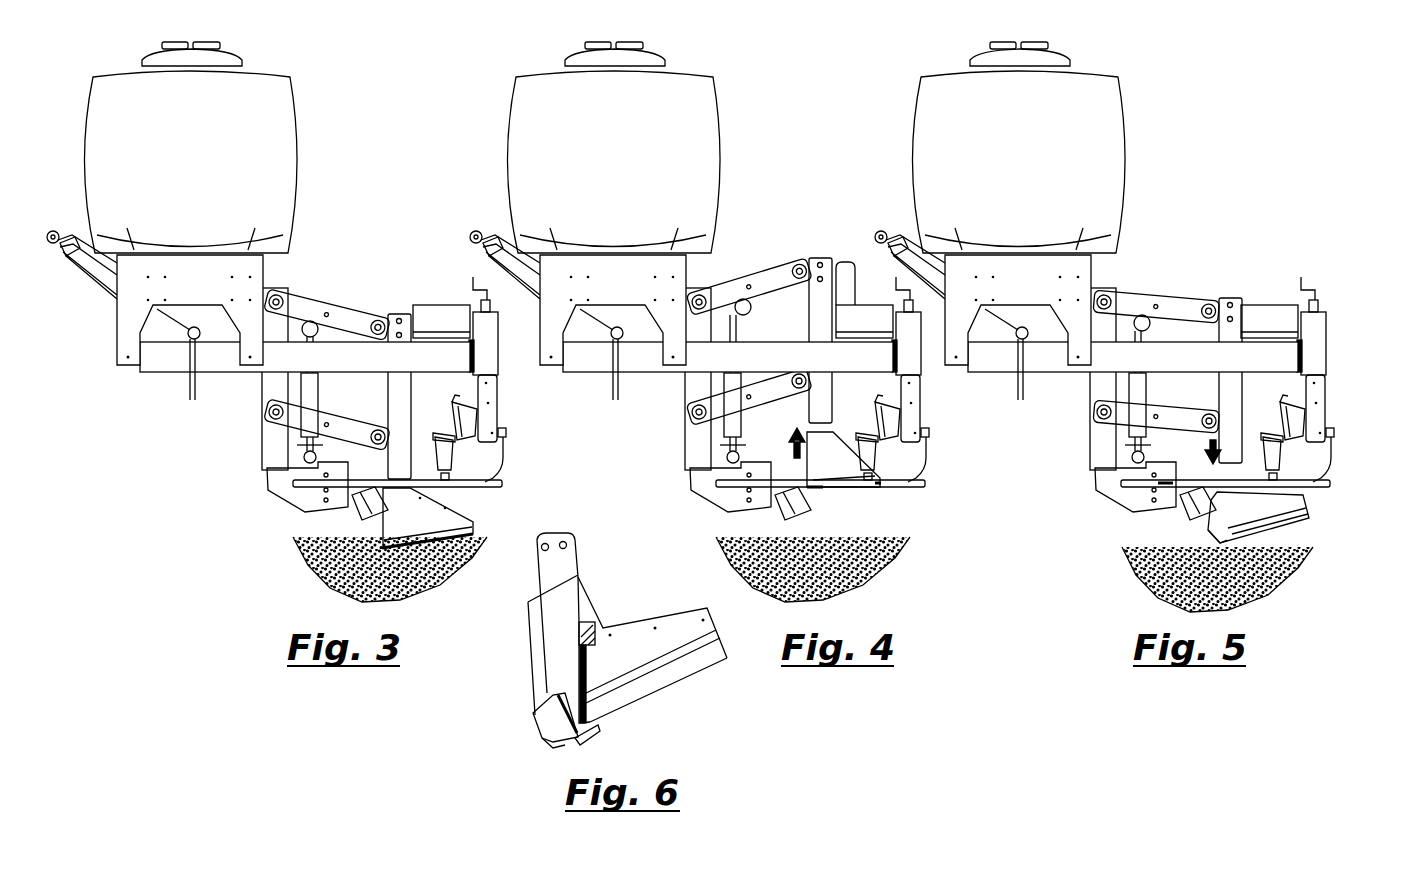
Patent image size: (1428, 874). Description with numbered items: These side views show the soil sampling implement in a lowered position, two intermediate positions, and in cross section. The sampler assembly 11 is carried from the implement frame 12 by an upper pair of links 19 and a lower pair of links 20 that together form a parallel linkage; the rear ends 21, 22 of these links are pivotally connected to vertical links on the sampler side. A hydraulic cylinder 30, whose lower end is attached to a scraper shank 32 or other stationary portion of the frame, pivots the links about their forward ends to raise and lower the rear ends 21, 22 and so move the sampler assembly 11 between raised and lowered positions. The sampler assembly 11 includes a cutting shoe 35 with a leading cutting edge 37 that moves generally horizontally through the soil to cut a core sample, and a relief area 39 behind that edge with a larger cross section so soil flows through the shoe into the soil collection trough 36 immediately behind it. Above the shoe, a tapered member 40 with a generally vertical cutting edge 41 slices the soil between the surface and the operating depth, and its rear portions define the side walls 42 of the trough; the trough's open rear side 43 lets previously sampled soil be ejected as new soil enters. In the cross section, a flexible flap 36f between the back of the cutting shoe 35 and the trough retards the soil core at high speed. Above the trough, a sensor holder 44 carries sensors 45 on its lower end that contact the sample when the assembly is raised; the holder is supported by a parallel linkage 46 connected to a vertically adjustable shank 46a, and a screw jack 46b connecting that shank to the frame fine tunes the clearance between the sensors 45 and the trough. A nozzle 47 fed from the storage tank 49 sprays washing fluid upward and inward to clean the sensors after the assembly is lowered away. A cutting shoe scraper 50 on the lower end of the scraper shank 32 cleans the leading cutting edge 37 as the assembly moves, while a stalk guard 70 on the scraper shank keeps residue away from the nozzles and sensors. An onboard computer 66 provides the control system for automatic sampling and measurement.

In FIG. 4, the sampler assembly 11 is at (880, 498).
In FIG. 5, the sampler assembly 11 is at (1296, 555).
In FIG. 3, the implement frame 12 is at (212, 362).
In FIG. 4, the implement frame 12 is at (716, 352).
In FIG. 5, the implement frame 12 is at (1121, 347).
In FIG. 3, the upper pair of links 19 is at (305, 297).
In FIG. 4, the upper pair of links 19 is at (749, 273).
In FIG. 5, the upper pair of links 19 is at (1156, 280).
In FIG. 3, the lower pair of links 20 is at (290, 418).
In FIG. 4, the lower pair of links 20 is at (722, 425).
In FIG. 5, the lower pair of links 20 is at (1132, 439).
In FIG. 3, the rear end of upper links 21 is at (388, 316).
In FIG. 4, the rear end of upper links 21 is at (806, 316).
In FIG. 5, the rear end of upper links 21 is at (1228, 350).
In FIG. 3, the rear end of lower links 22 is at (370, 448).
In FIG. 4, the rear end of lower links 22 is at (783, 365).
In FIG. 5, the rear end of lower links 22 is at (1290, 387).
In FIG. 3, the hydraulic cylinder 30 is at (318, 396).
In FIG. 4, the hydraulic cylinder 30 is at (735, 381).
In FIG. 5, the hydraulic cylinder 30 is at (1158, 389).
In FIG. 3, the scraper shank 32 is at (300, 490).
In FIG. 4, the scraper shank 32 is at (708, 492).
In FIG. 5, the scraper shank 32 is at (1119, 488).
In FIG. 4, the cutting shoe 35 is at (825, 510).
In FIG. 5, the cutting shoe 35 is at (1261, 574).
In FIG. 6, the cutting shoe 35 is at (552, 742).
In FIG. 4, the soil collection trough 36 is at (843, 482).
In FIG. 5, the soil collection trough 36 is at (1296, 526).
In FIG. 6, the soil collection trough 36 is at (688, 673).
In FIG. 6, the flexible flap 36f is at (582, 702).
In FIG. 6, the leading cutting edge 37 is at (535, 717).
In FIG. 6, the relief area 39 is at (585, 728).
In FIG. 6, the tapered member 40 is at (567, 602).
In FIG. 6, the vertical cutting edge 41 is at (542, 658).
In FIG. 6, the side walls 42 is at (635, 642).
In FIG. 3, the open rear side 43 is at (460, 530).
In FIG. 6, the open rear side 43 is at (722, 640).
In FIG. 3, the sensor holder 44 is at (450, 453).
In FIG. 4, the sensor holder 44 is at (918, 466).
In FIG. 5, the sensor holder 44 is at (1323, 454).
In FIG. 3, the sensors 45 is at (455, 470).
In FIG. 3, the parallel linkage 46 is at (466, 405).
In FIG. 4, the parallel linkage 46 is at (875, 407).
In FIG. 5, the parallel linkage 46 is at (1332, 419).
In FIG. 3, the vertically adjustable shank 46a is at (500, 412).
In FIG. 4, the vertically adjustable shank 46a is at (940, 408).
In FIG. 5, the vertically adjustable shank 46a is at (1347, 406).
In FIG. 3, the screw jack 46b is at (473, 297).
In FIG. 4, the screw jack 46b is at (881, 288).
In FIG. 5, the screw jack 46b is at (1343, 297).
In FIG. 3, the right nozzle 47 is at (458, 482).
In FIG. 4, the right nozzle 47 is at (838, 506).
In FIG. 5, the right nozzle 47 is at (1245, 503).
In FIG. 3, the storage tank 49 is at (280, 158).
In FIG. 4, the storage tank 49 is at (658, 147).
In FIG. 5, the storage tank 49 is at (1057, 147).
In FIG. 3, the cutting shoe scraper 50 is at (383, 497).
In FIG. 4, the cutting shoe scraper 50 is at (739, 520).
In FIG. 5, the cutting shoe scraper 50 is at (1197, 481).
In FIG. 3, the onboard computer 66 is at (452, 305).
In FIG. 4, the onboard computer 66 is at (852, 266).
In FIG. 5, the onboard computer 66 is at (1271, 284).
In FIG. 3, the stalk guard 70 is at (472, 537).
In FIG. 4, the stalk guard 70 is at (951, 508).
In FIG. 5, the stalk guard 70 is at (1121, 513).